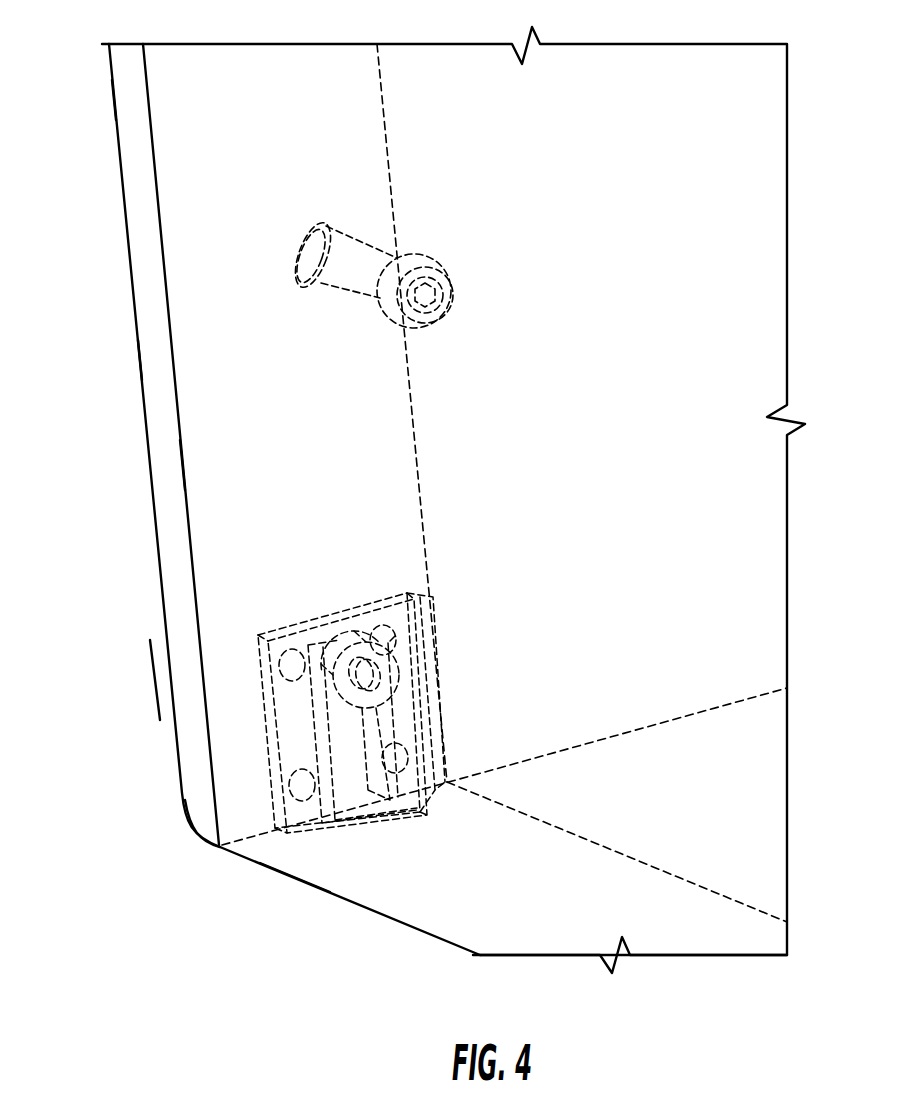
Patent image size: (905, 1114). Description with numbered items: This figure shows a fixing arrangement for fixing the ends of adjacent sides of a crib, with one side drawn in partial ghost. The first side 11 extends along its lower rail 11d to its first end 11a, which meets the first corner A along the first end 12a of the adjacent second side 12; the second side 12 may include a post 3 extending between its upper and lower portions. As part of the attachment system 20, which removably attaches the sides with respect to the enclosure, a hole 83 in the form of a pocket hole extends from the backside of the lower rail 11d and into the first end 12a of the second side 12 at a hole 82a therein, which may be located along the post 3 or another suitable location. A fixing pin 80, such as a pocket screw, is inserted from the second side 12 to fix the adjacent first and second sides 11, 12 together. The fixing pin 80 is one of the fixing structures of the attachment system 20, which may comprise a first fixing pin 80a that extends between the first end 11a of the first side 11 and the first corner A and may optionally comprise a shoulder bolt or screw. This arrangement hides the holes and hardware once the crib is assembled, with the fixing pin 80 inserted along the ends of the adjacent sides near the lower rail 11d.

The post 3 is at (127, 93).
The first side 11 is at (400, 912).
The first end of the first side 11a is at (195, 460).
The lower rail 11d is at (302, 890).
The second side 12 is at (135, 298).
The first end of the second side 12a is at (155, 350).
The attachment system 20 is at (128, 663).
The first corner A is at (200, 862).
The fixing pin 80 is at (366, 287).
The first fixing pin 80a is at (390, 318).
The hole 82a is at (299, 222).
The hole 83 is at (433, 323).